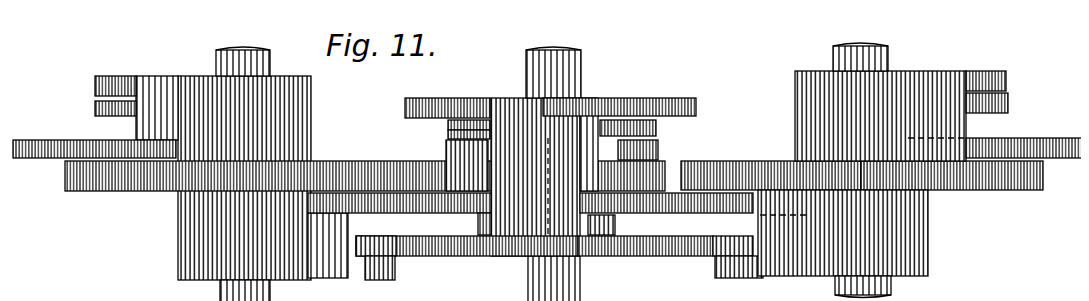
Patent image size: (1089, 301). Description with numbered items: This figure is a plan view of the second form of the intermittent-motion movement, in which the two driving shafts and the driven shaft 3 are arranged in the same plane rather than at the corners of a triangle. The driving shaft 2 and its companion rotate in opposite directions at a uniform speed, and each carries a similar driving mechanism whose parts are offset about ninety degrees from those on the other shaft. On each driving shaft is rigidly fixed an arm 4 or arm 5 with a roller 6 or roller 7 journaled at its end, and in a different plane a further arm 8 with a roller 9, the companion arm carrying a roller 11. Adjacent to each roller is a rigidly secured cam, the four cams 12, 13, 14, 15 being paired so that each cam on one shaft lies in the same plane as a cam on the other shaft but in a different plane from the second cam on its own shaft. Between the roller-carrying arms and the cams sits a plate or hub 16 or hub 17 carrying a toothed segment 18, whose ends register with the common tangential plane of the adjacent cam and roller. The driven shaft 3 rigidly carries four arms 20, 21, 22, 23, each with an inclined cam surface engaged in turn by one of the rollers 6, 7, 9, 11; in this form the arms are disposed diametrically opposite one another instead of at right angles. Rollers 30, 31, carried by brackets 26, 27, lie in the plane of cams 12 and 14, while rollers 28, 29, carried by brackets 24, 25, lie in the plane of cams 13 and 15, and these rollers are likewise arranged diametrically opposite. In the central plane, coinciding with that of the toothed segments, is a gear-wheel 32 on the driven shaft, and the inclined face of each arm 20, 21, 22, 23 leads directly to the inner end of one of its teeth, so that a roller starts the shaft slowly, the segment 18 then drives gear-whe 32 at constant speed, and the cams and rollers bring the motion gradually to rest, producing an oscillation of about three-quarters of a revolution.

The shaft 2 is at (828, 278).
The shaft 3 is at (573, 285).
The arm 4 is at (365, 272).
The arm 5 is at (735, 268).
The roller 6 is at (390, 238).
The roller 7 is at (727, 230).
The arm 8 is at (945, 68).
The roller 9 is at (1000, 94).
The roller 11 is at (87, 100).
The cam 12 is at (693, 205).
The cam 13 is at (1030, 128).
The cam 14 is at (437, 170).
The cam 15 is at (48, 150).
The plate or hub 16 is at (710, 152).
The plate or hub 17 is at (132, 183).
The toothed segment 18 is at (758, 153).
The arm 20 is at (700, 250).
The arm 21 is at (418, 236).
The arm 22 is at (450, 92).
The arm 23 is at (645, 92).
The bracket 24 is at (650, 118).
The bracket 25 is at (446, 114).
The bracket 26 is at (480, 212).
The bracket 27 is at (612, 248).
The roller 28 is at (651, 140).
The roller 29 is at (440, 130).
The roller 30 is at (472, 203).
The roller 31 is at (612, 206).
The gear-wheel 32 is at (660, 165).